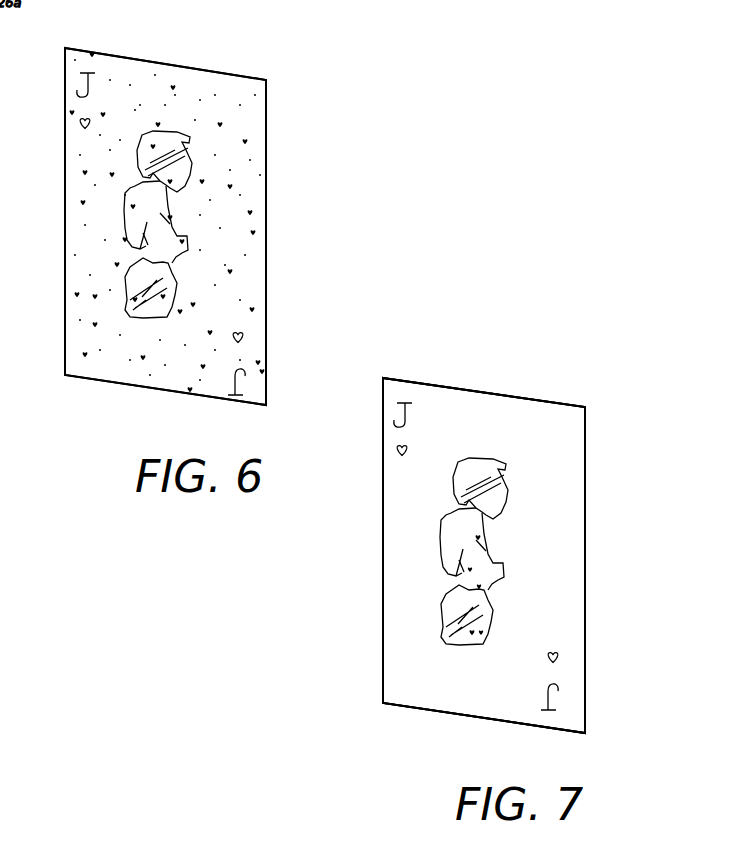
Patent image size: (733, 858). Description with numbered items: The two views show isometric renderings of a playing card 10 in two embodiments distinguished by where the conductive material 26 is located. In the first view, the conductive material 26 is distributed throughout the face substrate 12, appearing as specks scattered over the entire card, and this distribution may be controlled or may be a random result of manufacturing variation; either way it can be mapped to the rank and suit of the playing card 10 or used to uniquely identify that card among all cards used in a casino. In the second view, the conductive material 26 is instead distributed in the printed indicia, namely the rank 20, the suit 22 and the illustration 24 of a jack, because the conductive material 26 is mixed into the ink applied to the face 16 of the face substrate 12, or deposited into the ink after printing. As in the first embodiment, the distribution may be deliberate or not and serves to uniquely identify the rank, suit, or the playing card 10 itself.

In FIG. 6, the playing card 10 is at (300, 148).
In FIG. 7, the playing card 10 is at (420, 748).
In FIG. 6, the face substrate 12 is at (65, 345).
In FIG. 7, the face substrate 12 is at (383, 666).
In FIG. 7, the face 16 is at (563, 537).
In FIG. 6, the rank 20 is at (62, 80).
In FIG. 7, the rank 20 is at (377, 410).
In FIG. 6, the suit 22 is at (65, 127).
In FIG. 7, the suit 22 is at (380, 455).
In FIG. 6, the illustration 24 is at (95, 207).
In FIG. 7, the illustration 24 is at (408, 535).
In FIG. 6, the conductive material 26 is at (226, 95).
In FIG. 7, the conductive material 26 is at (478, 470).